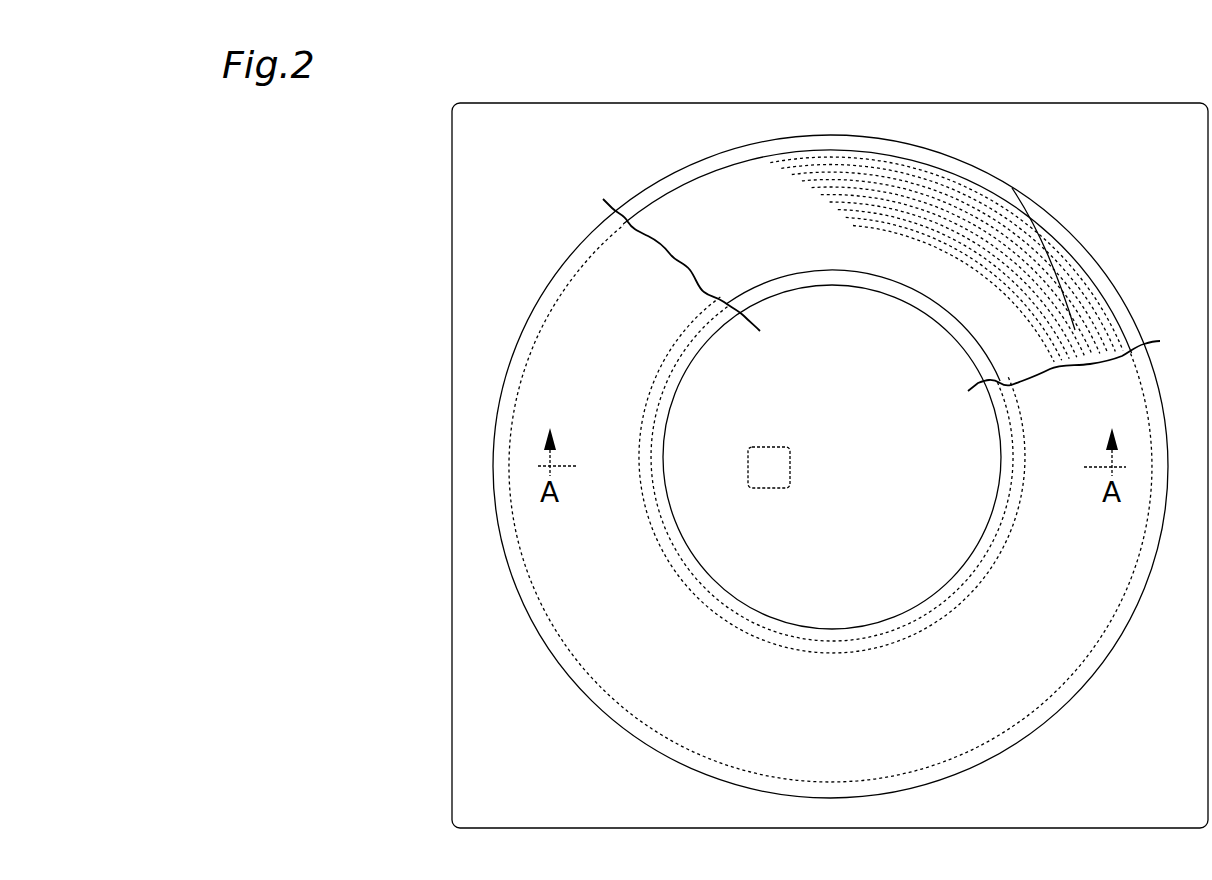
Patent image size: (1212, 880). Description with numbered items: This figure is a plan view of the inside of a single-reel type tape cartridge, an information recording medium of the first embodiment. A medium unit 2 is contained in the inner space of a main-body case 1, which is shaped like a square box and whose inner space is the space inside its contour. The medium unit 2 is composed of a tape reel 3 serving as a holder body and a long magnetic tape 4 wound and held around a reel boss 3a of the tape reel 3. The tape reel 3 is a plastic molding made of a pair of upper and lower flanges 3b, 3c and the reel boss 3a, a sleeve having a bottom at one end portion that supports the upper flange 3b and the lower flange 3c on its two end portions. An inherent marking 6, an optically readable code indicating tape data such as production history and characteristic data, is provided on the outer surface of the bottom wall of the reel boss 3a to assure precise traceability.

The main-body case 1 is at (780, 103).
The medium unit 2 is at (990, 76).
The tape reel 3 is at (977, 158).
The reel boss 3a is at (973, 323).
The upper flange 3b is at (590, 270).
The lower flange 3c is at (1012, 188).
The magnetic tape 4 is at (916, 155).
The inherent marking 6 is at (782, 448).